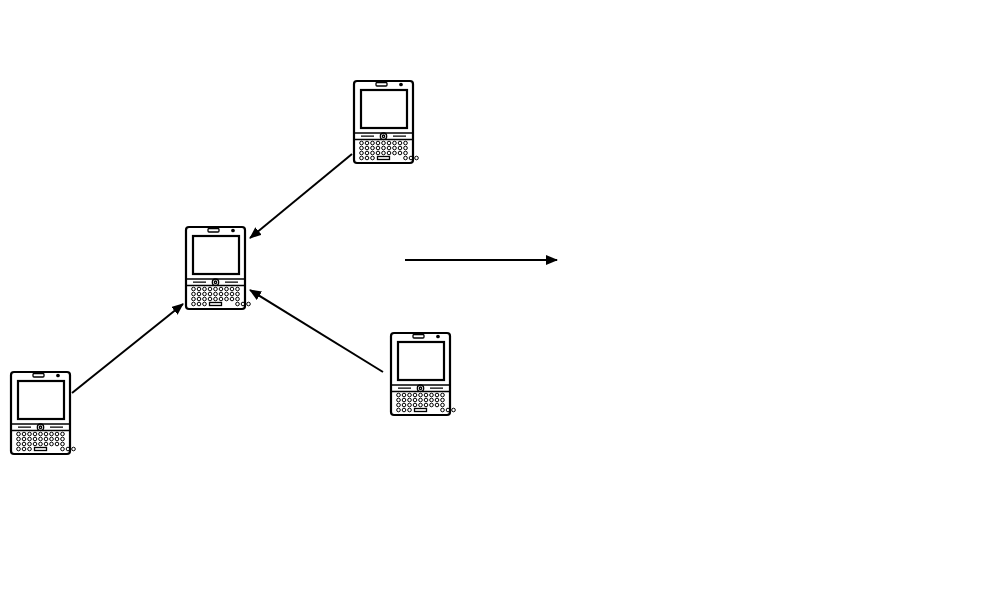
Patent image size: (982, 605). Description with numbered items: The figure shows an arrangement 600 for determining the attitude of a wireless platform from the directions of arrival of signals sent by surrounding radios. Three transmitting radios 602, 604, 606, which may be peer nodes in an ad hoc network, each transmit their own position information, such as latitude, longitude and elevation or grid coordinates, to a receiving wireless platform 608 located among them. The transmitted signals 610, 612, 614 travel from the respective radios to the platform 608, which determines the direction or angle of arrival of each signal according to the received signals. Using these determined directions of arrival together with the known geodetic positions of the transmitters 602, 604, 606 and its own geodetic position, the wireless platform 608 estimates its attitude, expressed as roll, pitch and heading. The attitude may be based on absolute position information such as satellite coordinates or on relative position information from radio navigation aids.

The system for determining attitude and angle of arrival 600 is at (613, 68).
The transmitting radio 602 is at (371, 81).
The transmitting radio 604 is at (406, 333).
The transmitting radio 606 is at (28, 372).
The receiving wireless platform 608 is at (203, 228).
The transmitted signal 610 is at (319, 189).
The transmitted signal 612 is at (336, 344).
The transmitted signal 614 is at (131, 351).